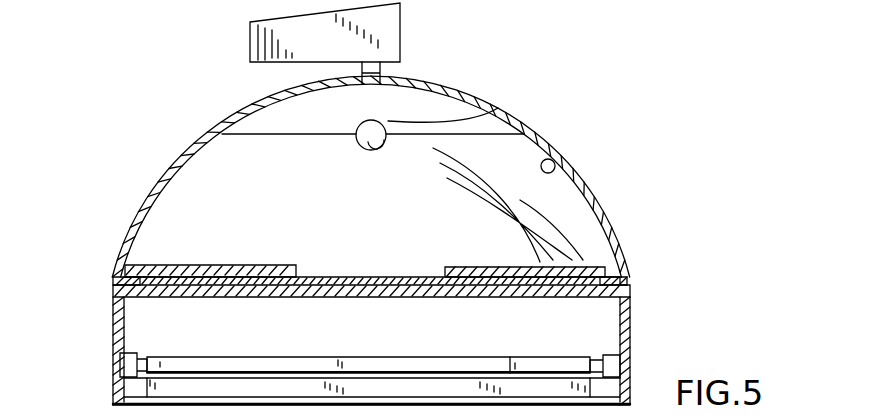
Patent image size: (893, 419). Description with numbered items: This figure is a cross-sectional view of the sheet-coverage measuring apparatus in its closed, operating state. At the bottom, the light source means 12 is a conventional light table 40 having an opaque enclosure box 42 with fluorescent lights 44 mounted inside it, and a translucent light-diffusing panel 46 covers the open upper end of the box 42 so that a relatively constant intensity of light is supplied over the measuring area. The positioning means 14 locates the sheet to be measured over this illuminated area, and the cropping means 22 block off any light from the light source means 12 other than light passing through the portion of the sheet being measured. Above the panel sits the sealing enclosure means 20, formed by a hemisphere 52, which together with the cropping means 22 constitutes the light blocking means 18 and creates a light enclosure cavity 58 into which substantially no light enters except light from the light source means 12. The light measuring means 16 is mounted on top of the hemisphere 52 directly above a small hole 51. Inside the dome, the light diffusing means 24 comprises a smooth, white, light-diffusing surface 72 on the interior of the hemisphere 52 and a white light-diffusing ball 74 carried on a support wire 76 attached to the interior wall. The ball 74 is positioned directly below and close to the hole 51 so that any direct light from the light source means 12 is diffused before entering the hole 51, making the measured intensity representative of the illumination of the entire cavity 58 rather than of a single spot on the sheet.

The light source means 12 is at (648, 330).
The positioning means 14 is at (645, 282).
The light measuring means 16 is at (258, 15).
The light blocking means 18 is at (401, 56).
The sealing enclosure means 20 is at (552, 128).
The cropping means 22 is at (590, 255).
The light diffusing means 24 is at (348, 154).
The light table 40 is at (113, 343).
The opaque enclosure box 42 is at (118, 367).
The fluorescent lights 44 is at (170, 360).
The translucent light-diffusing panel 46 is at (148, 297).
The small hole 51 is at (383, 76).
The hemisphere 52 is at (388, 122).
The light enclosure cavity 58 is at (233, 162).
The light-diffusing surface 72 is at (555, 167).
The light-diffusing ball 74 is at (498, 108).
The support wire 76 is at (263, 133).